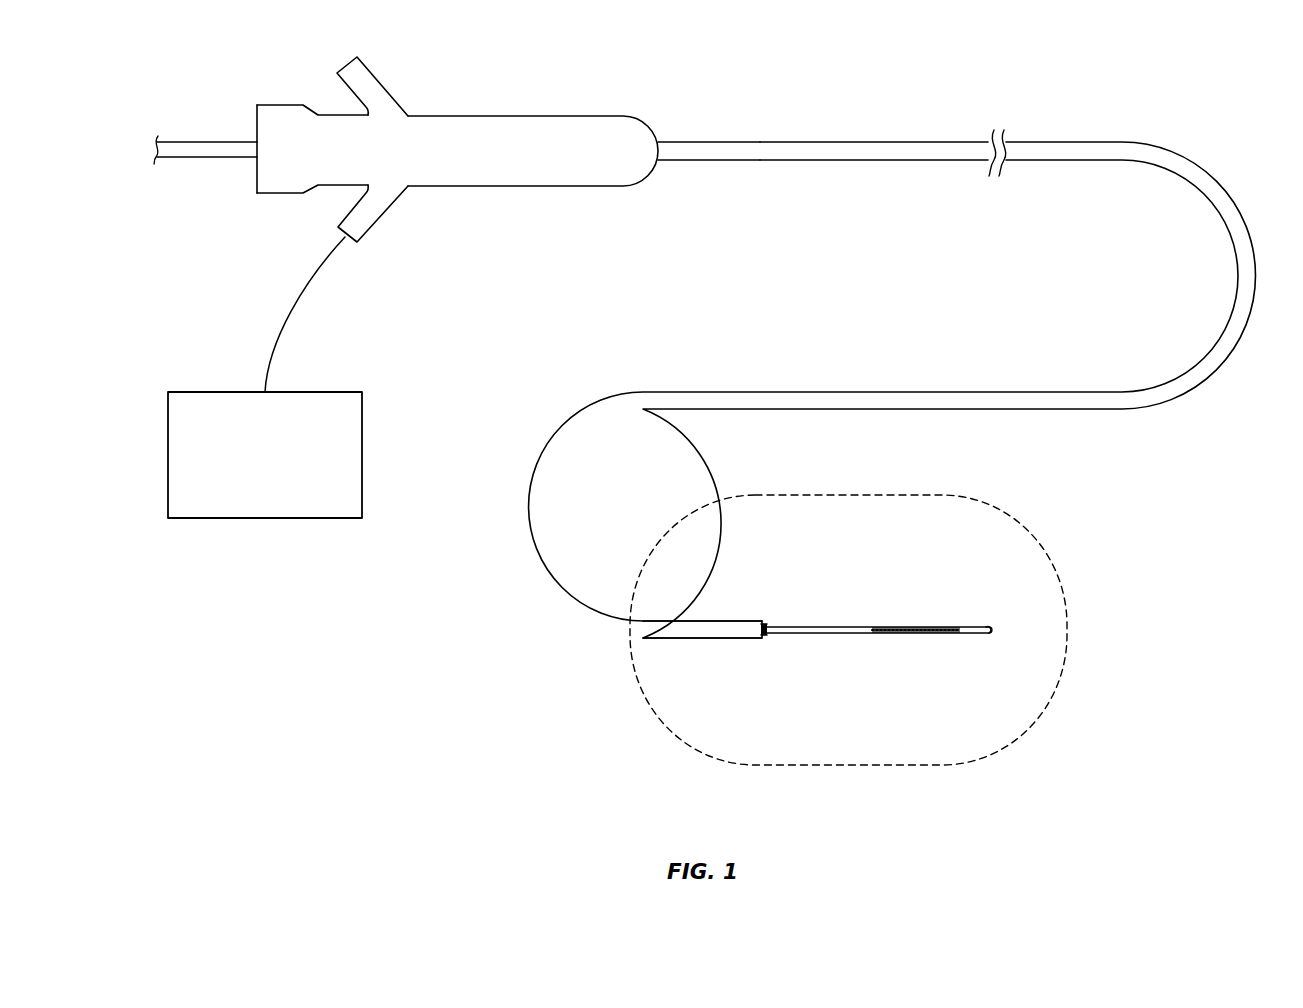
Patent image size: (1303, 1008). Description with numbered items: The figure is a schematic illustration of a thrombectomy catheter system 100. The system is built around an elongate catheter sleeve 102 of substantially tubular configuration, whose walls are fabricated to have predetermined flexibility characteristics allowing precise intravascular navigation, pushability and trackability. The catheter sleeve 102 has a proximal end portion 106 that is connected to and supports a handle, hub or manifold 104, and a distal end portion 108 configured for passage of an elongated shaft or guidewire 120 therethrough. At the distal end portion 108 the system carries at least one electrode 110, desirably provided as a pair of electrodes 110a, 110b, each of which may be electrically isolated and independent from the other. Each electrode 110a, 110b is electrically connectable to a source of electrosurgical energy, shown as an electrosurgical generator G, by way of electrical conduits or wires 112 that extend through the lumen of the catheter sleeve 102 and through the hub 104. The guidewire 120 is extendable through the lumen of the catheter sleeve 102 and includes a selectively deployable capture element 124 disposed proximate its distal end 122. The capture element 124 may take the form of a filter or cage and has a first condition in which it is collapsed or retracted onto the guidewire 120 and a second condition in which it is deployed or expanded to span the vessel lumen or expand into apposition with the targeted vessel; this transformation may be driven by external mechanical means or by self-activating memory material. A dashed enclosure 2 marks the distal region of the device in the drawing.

The thrombectomy catheter system 100 is at (1120, 86).
The catheter sleeve 102 is at (876, 132).
The handle, hub or manifold 104 is at (518, 115).
The proximal end portion 106 is at (666, 147).
The distal end portion 108 is at (748, 620).
The electrode 110 is at (774, 613).
The electrode 110a is at (763, 621).
The electrode 110b is at (763, 638).
The electrical conduits or wires 112 is at (293, 300).
The shaft or guidewire 120 is at (230, 140).
The distal end 122 is at (974, 637).
The capture element 124 is at (940, 627).
The detail region 2 is at (862, 496).
The electrosurgical generator G is at (218, 392).